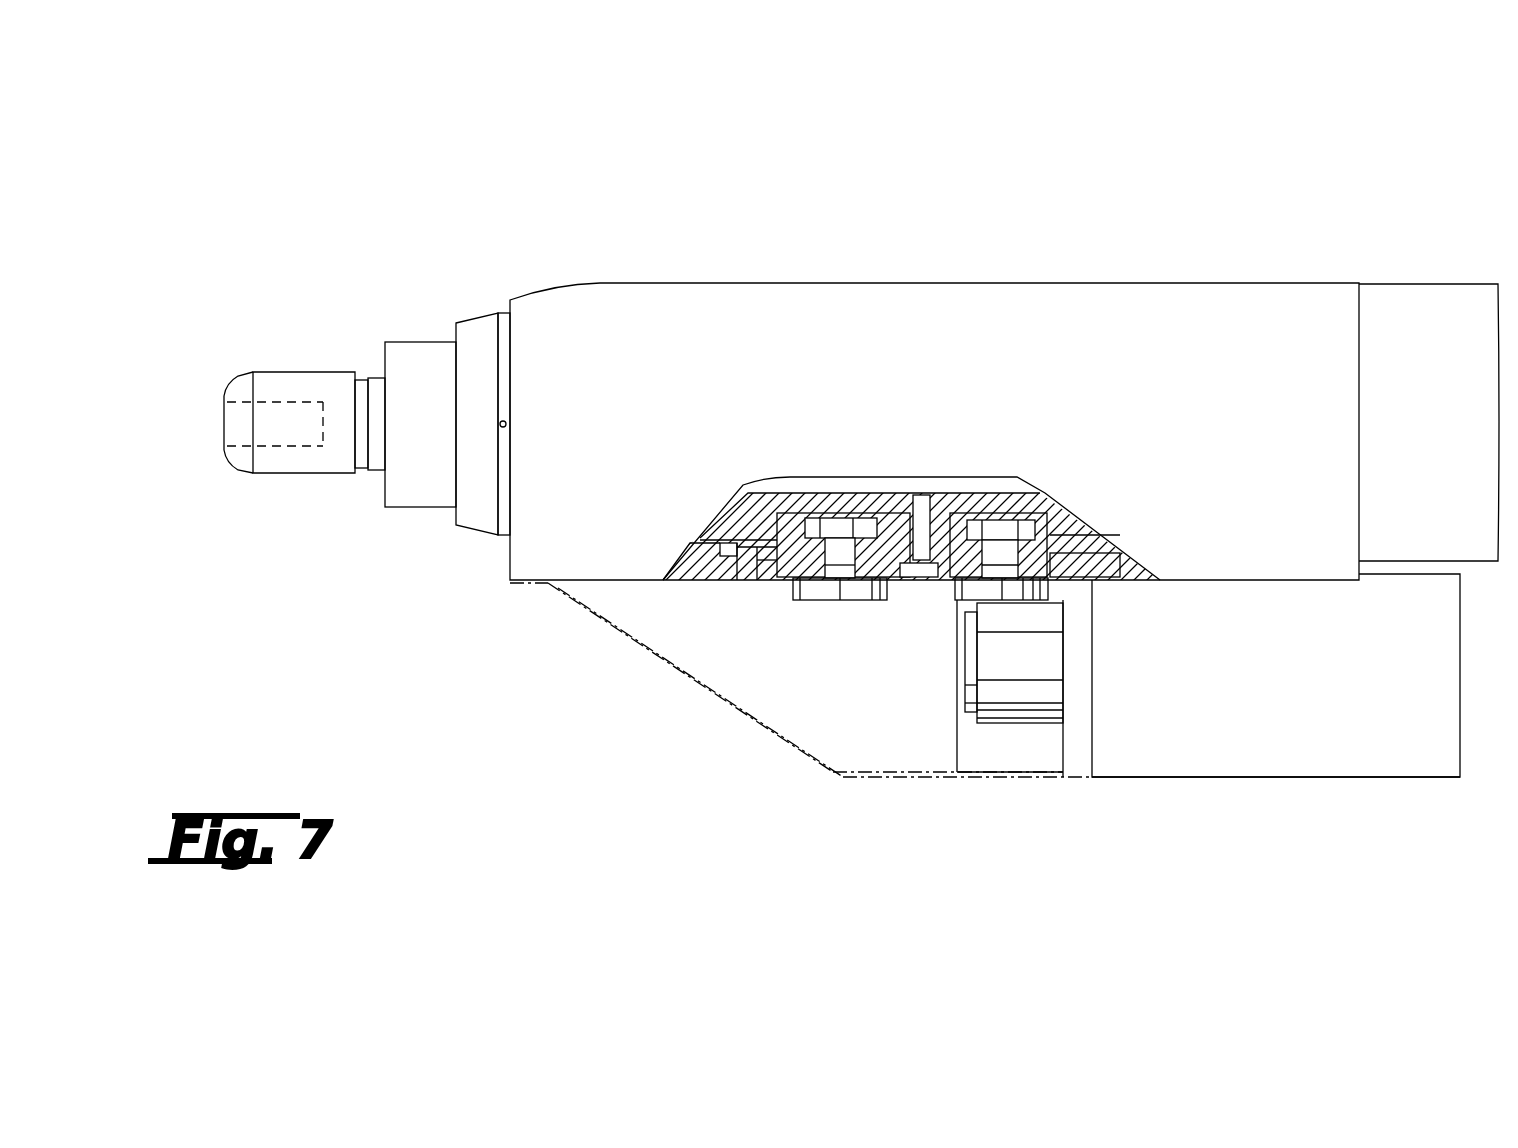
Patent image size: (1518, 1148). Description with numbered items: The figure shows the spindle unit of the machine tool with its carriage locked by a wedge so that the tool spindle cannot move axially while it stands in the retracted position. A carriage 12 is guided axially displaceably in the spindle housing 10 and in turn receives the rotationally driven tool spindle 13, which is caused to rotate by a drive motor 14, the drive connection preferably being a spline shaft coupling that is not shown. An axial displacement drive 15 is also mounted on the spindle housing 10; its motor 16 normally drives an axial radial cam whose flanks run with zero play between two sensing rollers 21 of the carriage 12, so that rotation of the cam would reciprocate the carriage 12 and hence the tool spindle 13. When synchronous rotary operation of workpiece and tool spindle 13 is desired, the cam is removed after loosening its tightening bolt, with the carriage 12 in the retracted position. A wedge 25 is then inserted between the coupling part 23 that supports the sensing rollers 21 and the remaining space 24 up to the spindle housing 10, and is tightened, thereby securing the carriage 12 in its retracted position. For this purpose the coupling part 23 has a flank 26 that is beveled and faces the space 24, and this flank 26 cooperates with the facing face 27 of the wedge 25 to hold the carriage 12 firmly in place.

The spindle housing 10 is at (705, 562).
The carriage 12 is at (742, 512).
The tool spindle 13 is at (503, 485).
The drive motor 14 is at (1406, 352).
The axial displacement drive 15 is at (1265, 785).
The motor 16 is at (1342, 685).
The sensing rollers 21 is at (850, 588).
The coupling part 23 is at (800, 572).
The space 24 is at (740, 562).
The wedge 25 is at (757, 560).
The flank 26 is at (780, 555).
The face 27 is at (775, 557).